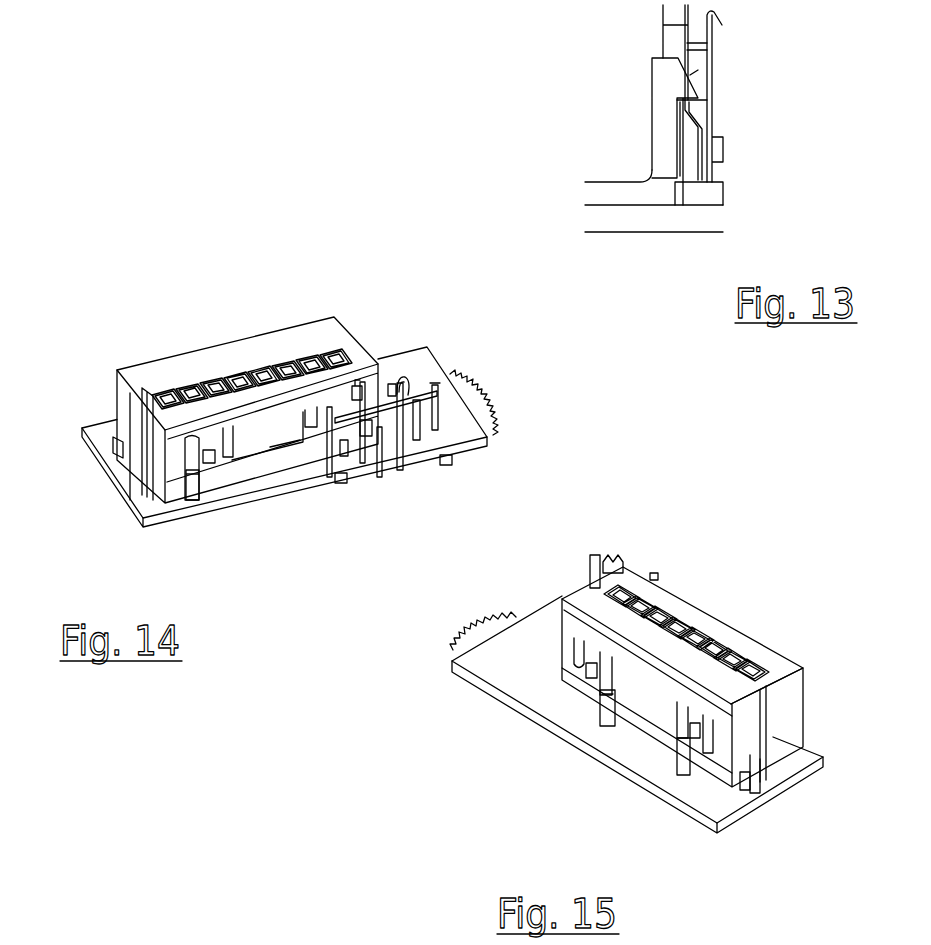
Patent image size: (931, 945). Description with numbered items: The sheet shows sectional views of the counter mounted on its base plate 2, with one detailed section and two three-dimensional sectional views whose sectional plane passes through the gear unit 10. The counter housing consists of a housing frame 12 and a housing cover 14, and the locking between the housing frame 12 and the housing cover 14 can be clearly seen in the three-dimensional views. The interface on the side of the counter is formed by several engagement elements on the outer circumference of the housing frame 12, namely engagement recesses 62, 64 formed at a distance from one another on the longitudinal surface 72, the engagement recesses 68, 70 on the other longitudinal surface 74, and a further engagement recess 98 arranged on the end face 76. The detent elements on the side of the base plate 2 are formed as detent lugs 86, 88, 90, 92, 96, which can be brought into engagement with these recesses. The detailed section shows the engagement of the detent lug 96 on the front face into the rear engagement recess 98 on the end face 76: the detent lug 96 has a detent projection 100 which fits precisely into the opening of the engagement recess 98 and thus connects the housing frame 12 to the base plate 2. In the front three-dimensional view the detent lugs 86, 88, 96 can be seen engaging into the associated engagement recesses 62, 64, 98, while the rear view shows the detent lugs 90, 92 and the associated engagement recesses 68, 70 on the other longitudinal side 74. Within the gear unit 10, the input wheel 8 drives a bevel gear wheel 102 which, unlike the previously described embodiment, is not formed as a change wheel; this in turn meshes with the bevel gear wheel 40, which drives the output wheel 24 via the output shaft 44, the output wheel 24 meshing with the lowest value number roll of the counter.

In FIG. 13, the base plate 2 is at (605, 197).
In FIG. 14, the base plate 2 is at (423, 363).
In FIG. 14, the input wheel 8 is at (445, 463).
In FIG. 14, the gear unit 10 is at (423, 481).
In FIG. 13, the housing frame 12 is at (704, 114).
In FIG. 14, the housing frame 12 is at (258, 470).
In FIG. 15, the housing frame 12 is at (658, 740).
In FIG. 14, the housing cover 14 is at (195, 368).
In FIG. 15, the housing cover 14 is at (683, 610).
In FIG. 14, the output wheel 24 is at (357, 388).
In FIG. 14, the bevel gear wheel 40 is at (405, 387).
In FIG. 14, the output shaft 44 is at (392, 392).
In FIG. 14, the engagement recess 62 is at (187, 462).
In FIG. 14, the engagement recess 64 is at (363, 430).
In FIG. 15, the engagement recess 68 is at (604, 716).
In FIG. 15, the engagement recess 70 is at (696, 772).
In FIG. 14, the longitudinal surface 72 is at (294, 458).
In FIG. 15, the longitudinal surface 74 is at (574, 684).
In FIG. 13, the end face 76 is at (675, 40).
In FIG. 14, the detent lug 86 is at (190, 497).
In FIG. 14, the detent lug 88 is at (343, 450).
In FIG. 15, the detent lug 90 is at (670, 765).
In FIG. 15, the detent lug 92 is at (608, 700).
In FIG. 13, the detent lug 96 is at (663, 124).
In FIG. 14, the detent lug 96 is at (120, 460).
In FIG. 15, the detent lug 96 is at (762, 763).
In FIG. 13, the engagement recess 98 is at (690, 75).
In FIG. 15, the engagement recess 98 is at (766, 778).
In FIG. 13, the detent projection 100 is at (676, 83).
In FIG. 14, the bevel gear wheel 102 is at (400, 423).